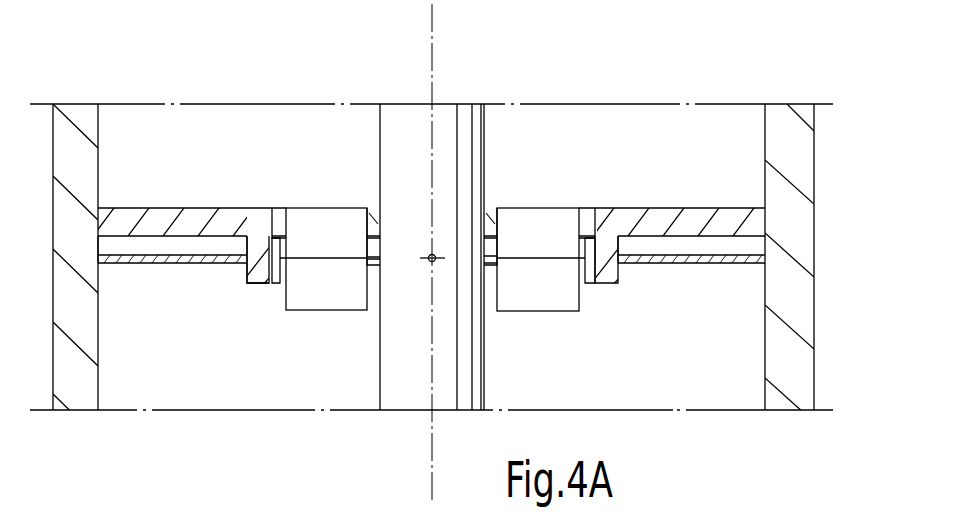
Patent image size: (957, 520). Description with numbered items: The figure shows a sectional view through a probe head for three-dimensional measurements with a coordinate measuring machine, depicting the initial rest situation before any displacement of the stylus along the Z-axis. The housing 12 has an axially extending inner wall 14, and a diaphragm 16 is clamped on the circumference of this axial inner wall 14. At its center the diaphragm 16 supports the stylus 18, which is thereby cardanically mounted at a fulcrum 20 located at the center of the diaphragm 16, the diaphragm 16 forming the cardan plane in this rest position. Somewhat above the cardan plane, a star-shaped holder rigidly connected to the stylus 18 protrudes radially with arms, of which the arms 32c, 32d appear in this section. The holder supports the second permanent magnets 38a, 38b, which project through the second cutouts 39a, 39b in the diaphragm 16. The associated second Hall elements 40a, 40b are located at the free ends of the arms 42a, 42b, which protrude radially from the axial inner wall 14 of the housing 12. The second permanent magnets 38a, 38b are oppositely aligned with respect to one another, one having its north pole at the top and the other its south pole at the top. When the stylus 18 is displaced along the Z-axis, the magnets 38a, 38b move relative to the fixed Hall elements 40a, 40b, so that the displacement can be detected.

The housing 12 is at (85, 166).
The axial inner wall 14 is at (763, 168).
The diaphragm 16 is at (167, 265).
The stylus 18 is at (392, 159).
The fulcrum 20 is at (430, 262).
The arm 32c is at (278, 216).
The arm 32d is at (588, 217).
The second permanent magnet 38a is at (555, 300).
The second permanent magnet 38b is at (302, 308).
The second cutout 39a is at (620, 265).
The second cutout 39b is at (243, 265).
The second Hall element 40a is at (588, 283).
The second Hall element 40b is at (275, 283).
The arm 42a is at (640, 218).
The arm 42b is at (193, 218).